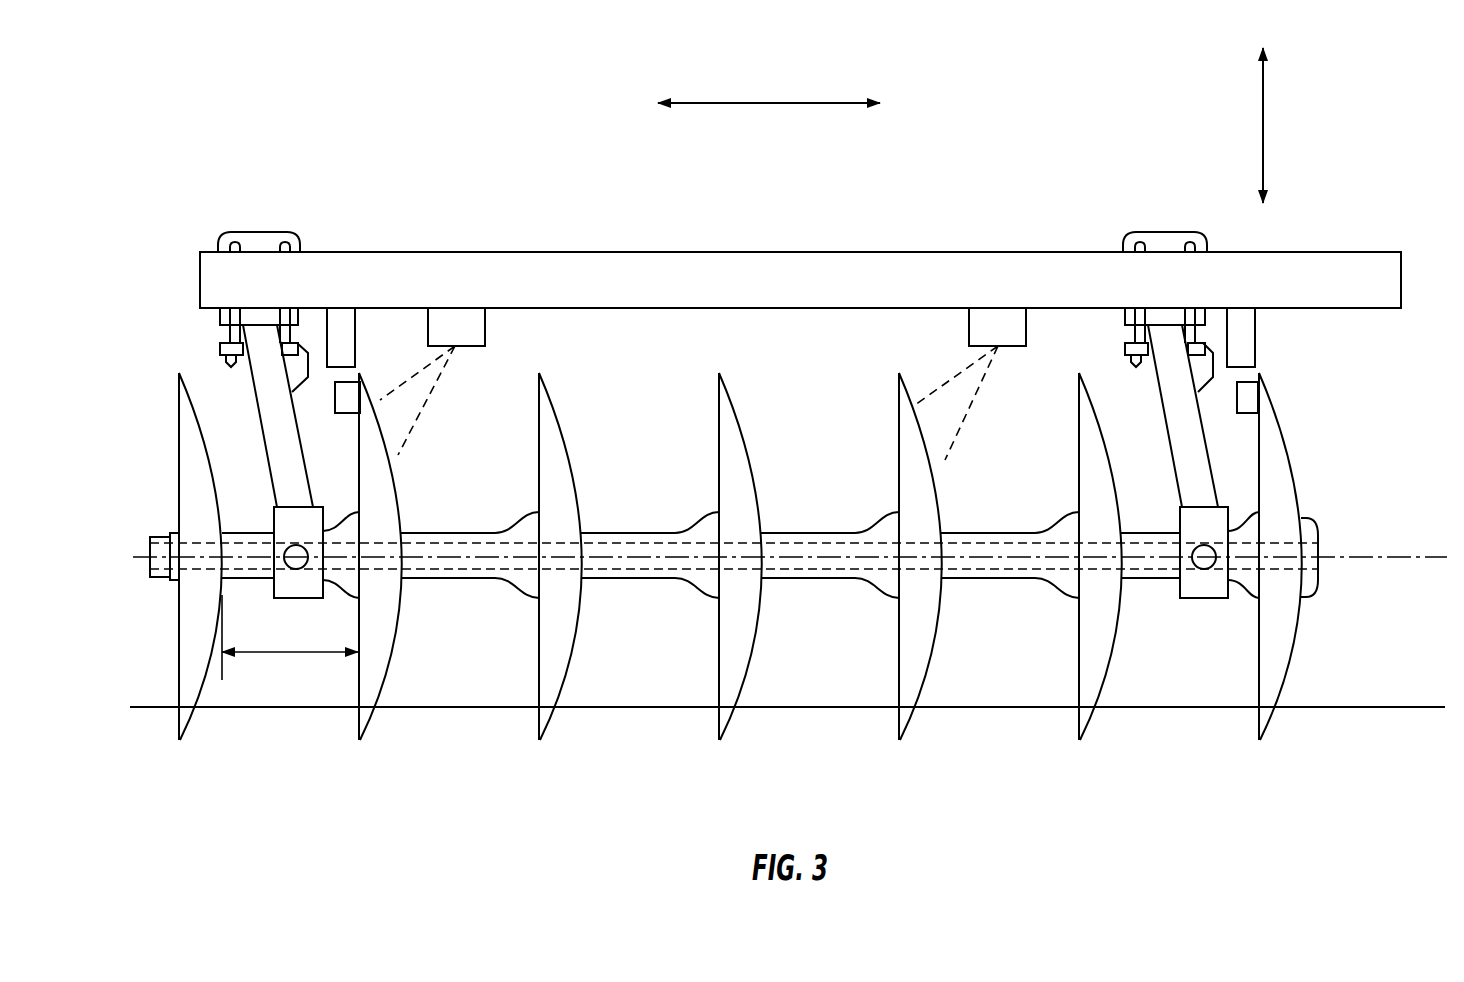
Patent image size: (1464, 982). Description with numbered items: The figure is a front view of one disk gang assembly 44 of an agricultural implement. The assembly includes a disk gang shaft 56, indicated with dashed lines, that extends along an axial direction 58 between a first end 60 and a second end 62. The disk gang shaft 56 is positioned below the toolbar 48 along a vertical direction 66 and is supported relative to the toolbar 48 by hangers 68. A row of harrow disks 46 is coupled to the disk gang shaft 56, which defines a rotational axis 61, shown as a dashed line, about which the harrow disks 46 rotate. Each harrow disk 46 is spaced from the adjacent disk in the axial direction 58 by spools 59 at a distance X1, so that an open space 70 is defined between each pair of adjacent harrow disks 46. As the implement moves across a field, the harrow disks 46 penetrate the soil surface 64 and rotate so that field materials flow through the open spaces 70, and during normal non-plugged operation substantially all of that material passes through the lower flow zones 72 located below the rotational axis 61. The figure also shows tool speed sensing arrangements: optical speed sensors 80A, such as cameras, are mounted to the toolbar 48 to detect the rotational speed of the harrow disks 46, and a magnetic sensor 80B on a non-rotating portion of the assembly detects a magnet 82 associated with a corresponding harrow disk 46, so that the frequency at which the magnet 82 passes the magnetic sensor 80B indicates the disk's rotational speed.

The disk gang assembly 44 is at (216, 198).
The harrow disk 46 is at (179, 740).
The toolbar 48 is at (613, 250).
The disk gang shaft 56 is at (1145, 572).
The axial direction 58 is at (755, 103).
The spool 59 is at (467, 580).
The first end 60 is at (109, 545).
The rotational axis 61 is at (1400, 557).
The second end 62 is at (1338, 539).
The soil surface 64 is at (1340, 707).
The vertical direction 66 is at (1263, 138).
The hanger 68 is at (265, 405).
The open space 70 is at (608, 414).
The lower flow zone 72 is at (456, 672).
The optical speed sensor 80A is at (432, 323).
The magnetic sensor 80B is at (337, 333).
The magnet 82 is at (337, 395).
The distance X1 is at (272, 655).